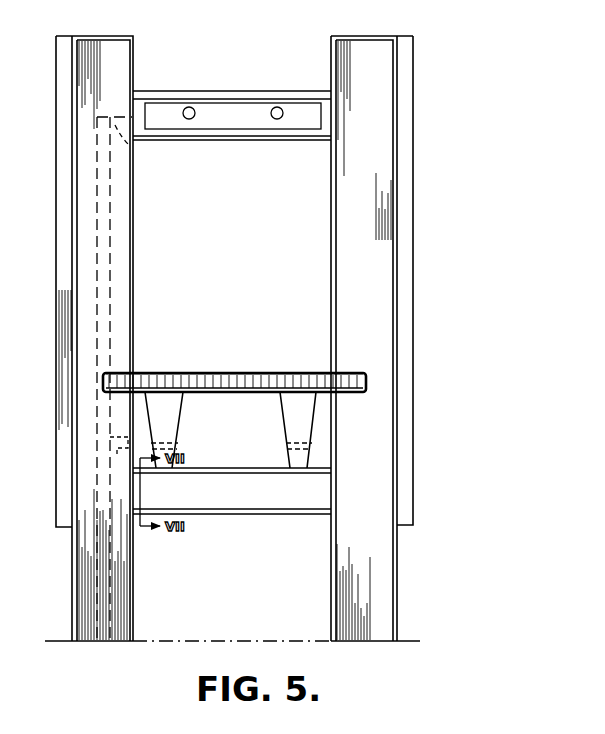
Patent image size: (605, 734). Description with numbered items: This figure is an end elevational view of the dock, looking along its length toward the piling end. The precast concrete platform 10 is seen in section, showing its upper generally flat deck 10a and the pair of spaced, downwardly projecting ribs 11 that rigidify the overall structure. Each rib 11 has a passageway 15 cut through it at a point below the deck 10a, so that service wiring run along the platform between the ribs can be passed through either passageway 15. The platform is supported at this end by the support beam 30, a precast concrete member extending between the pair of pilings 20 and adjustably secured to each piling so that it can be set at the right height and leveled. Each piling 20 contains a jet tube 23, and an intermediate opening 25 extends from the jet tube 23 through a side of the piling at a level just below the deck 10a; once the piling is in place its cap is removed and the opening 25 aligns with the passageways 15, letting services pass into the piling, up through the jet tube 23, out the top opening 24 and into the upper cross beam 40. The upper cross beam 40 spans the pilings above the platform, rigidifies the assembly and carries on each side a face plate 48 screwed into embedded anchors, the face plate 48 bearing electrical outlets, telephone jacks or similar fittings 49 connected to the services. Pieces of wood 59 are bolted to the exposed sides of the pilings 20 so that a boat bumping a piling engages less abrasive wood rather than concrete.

The precast concrete platform 10 is at (204, 370).
The upper deck 10a is at (262, 375).
The ribs 11 is at (178, 412).
The passageway 15 is at (180, 446).
The pilings 20 is at (97, 109).
The jet tube 23 is at (108, 284).
The top opening 24 is at (128, 146).
The intermediate opening 25 is at (113, 458).
The support beam 30 is at (249, 492).
The upper cross beam 40 is at (239, 90).
The face plate 48 is at (241, 126).
The electrical outlets or jacks 49 is at (189, 106).
The pieces of wood 59 is at (60, 187).